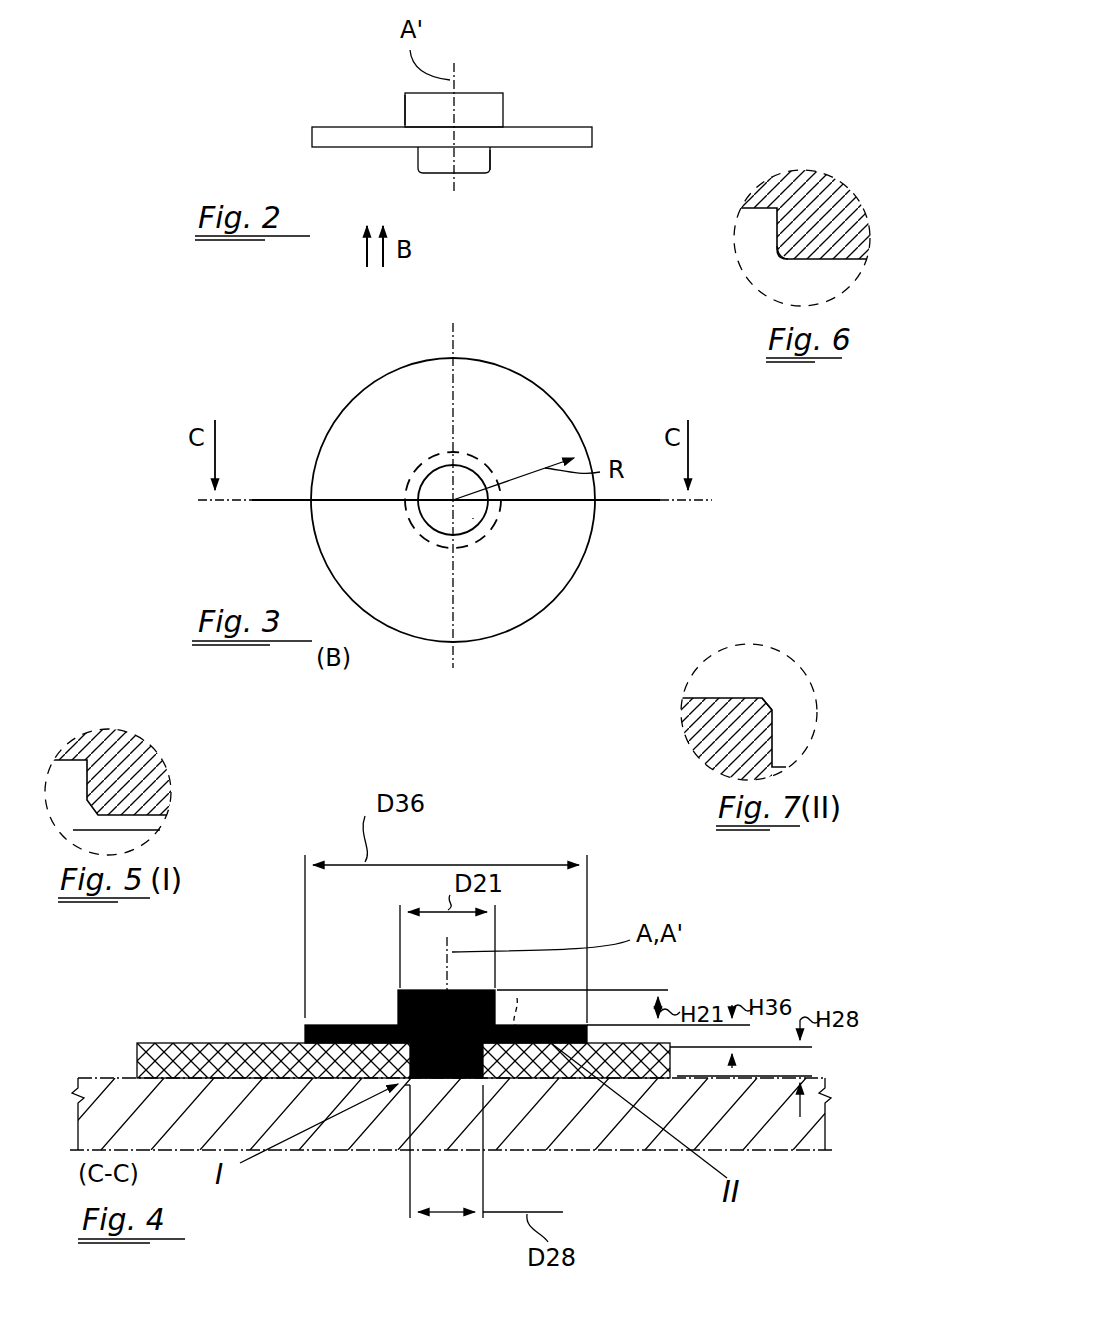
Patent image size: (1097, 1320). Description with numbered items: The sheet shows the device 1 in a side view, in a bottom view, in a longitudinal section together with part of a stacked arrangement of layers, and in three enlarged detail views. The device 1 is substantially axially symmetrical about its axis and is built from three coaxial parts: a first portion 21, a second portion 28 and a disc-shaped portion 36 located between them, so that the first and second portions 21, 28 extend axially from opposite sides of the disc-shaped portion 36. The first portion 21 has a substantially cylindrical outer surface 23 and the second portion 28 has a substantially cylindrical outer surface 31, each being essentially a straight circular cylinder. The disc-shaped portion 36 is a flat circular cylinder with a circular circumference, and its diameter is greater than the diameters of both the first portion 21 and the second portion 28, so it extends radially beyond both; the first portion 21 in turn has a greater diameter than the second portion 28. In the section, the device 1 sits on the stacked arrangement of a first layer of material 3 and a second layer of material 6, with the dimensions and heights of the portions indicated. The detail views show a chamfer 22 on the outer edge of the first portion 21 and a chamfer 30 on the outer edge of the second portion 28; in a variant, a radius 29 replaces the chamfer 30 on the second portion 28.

In FIG. 2, the device 1 is at (614, 76).
In FIG. 3, the device 1 is at (562, 370).
In FIG. 6, the device 1 is at (828, 192).
In FIG. 7, the device 1 is at (708, 758).
In FIG. 5, the device 1 is at (132, 742).
In FIG. 4, the device 1 is at (550, 1006).
In FIG. 4, the first layer of material 3 is at (195, 1055).
In FIG. 4, the second layer of material 6 is at (116, 1074).
In FIG. 2, the first portion 21 is at (478, 103).
In FIG. 3, the first portion 21 is at (412, 522).
In FIG. 7, the first portion 21 is at (700, 722).
In FIG. 4, the first portion 21 is at (395, 1000).
In FIG. 7, the chamfer 22 is at (776, 696).
In FIG. 4, the chamfer 22 is at (499, 988).
In FIG. 2, the cylindrical outer surface 23 is at (398, 103).
In FIG. 2, the second portion 28 is at (478, 170).
In FIG. 3, the second portion 28 is at (473, 518).
In FIG. 6, the second portion 28 is at (828, 242).
In FIG. 5, the second portion 28 is at (158, 783).
In FIG. 4, the second portion 28 is at (463, 1085).
In FIG. 6, the radius 29 is at (772, 262).
In FIG. 5, the chamfer 30 is at (90, 818).
In FIG. 4, the chamfer 30 is at (403, 1090).
In FIG. 2, the cylindrical outer surface 31 is at (498, 160).
In FIG. 3, the cylindrical outer surface 31 is at (492, 462).
In FIG. 2, the disc-shaped portion 36 is at (590, 135).
In FIG. 3, the disc-shaped portion 36 is at (352, 418).
In FIG. 4, the disc-shaped portion 36 is at (335, 1022).